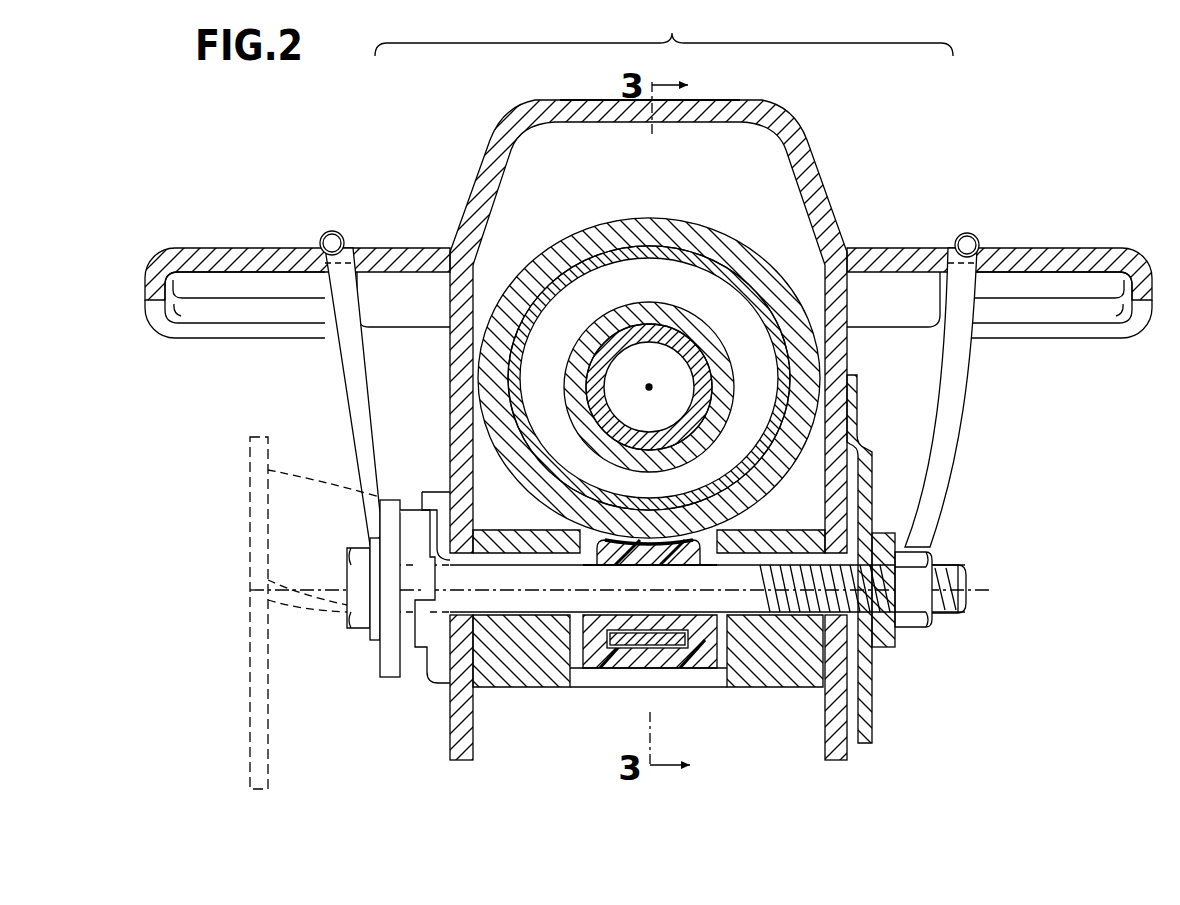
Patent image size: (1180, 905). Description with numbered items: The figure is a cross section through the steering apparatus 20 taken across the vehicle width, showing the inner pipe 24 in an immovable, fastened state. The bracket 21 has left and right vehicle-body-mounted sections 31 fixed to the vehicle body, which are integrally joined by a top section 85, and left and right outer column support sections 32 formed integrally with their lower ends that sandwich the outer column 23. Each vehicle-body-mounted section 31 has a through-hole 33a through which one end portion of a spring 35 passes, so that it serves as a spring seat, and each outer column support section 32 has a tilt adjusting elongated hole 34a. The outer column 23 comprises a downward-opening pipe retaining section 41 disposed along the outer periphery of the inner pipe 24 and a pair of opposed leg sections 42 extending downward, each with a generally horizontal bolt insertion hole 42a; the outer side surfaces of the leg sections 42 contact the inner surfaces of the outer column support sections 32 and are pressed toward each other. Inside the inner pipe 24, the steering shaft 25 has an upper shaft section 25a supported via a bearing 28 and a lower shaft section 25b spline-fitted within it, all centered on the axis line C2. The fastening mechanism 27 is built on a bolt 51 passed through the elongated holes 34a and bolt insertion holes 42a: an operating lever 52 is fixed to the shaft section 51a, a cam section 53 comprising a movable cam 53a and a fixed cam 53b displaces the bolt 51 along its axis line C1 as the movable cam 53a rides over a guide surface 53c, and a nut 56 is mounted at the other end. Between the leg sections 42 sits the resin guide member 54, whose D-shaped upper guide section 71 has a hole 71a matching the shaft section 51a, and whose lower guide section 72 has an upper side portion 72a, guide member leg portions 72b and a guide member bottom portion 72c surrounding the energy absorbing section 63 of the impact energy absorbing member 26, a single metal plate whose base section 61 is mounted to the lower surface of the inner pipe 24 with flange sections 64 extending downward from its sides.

The steering apparatus 20 is at (140, 146).
The bracket 21 is at (664, 29).
The outer column 23 is at (703, 216).
The inner pipe 24 is at (740, 262).
The steering shaft 25 is at (625, 307).
The upper shaft section 25a is at (628, 302).
The lower shaft section 25b is at (603, 335).
The impact energy absorbing member 26 is at (613, 526).
The fastening mechanism 27 is at (960, 566).
The bearing 28 is at (840, 325).
The vehicle-body-mounted sections 31 is at (440, 246).
The outer column support sections 32 is at (478, 245).
The through-hole 33a is at (352, 238).
The tilt adjusting elongated hole 34a is at (440, 556).
The spring 35 is at (972, 390).
The pipe retaining section 41 is at (448, 325).
The leg sections 42 is at (648, 699).
The bolt insertion hole 42a is at (484, 640).
The bolt 51 is at (360, 630).
The shaft section 51a is at (445, 688).
The operating lever 52 is at (262, 705).
The cam section 53 is at (374, 611).
The movable cam 53a is at (376, 642).
The fixed cam 53b is at (395, 679).
The guide surface 53c is at (426, 515).
The guide member 54 is at (692, 668).
The nut 56 is at (920, 628).
The base section 61 is at (652, 540).
The energy absorbing section 63 is at (655, 648).
The flange sections 64 is at (525, 520).
The upper guide section 71 is at (712, 550).
The hole 71a is at (685, 568).
The lower guide section 72 is at (627, 738).
The upper side portion 72a is at (545, 625).
The guide member leg portions 72b is at (568, 625).
The guide member bottom portion 72c is at (628, 670).
The top section 85 is at (568, 100).
The axis line of the bolt C1 is at (978, 590).
The axis line of the inner pipe C2 is at (649, 387).